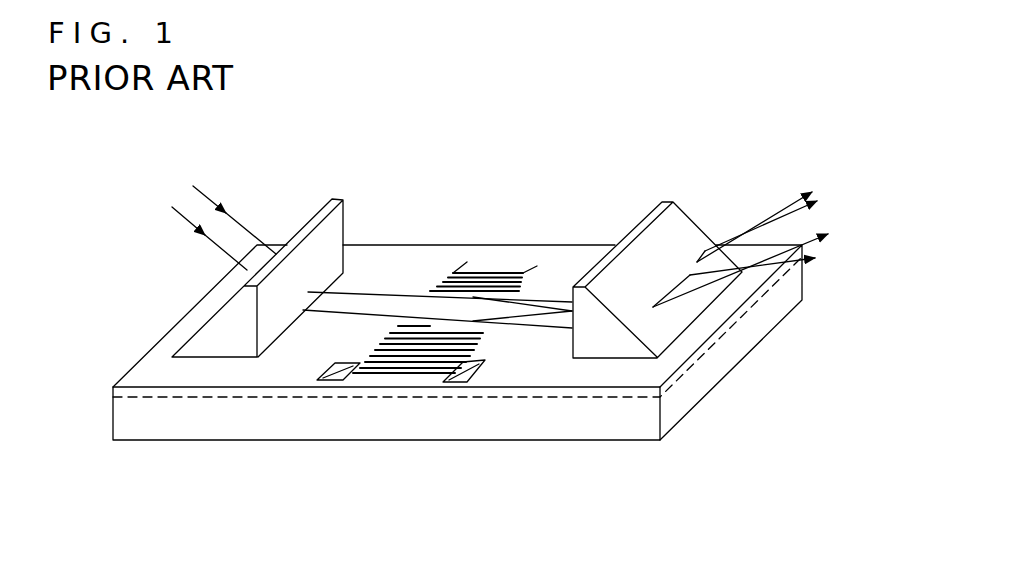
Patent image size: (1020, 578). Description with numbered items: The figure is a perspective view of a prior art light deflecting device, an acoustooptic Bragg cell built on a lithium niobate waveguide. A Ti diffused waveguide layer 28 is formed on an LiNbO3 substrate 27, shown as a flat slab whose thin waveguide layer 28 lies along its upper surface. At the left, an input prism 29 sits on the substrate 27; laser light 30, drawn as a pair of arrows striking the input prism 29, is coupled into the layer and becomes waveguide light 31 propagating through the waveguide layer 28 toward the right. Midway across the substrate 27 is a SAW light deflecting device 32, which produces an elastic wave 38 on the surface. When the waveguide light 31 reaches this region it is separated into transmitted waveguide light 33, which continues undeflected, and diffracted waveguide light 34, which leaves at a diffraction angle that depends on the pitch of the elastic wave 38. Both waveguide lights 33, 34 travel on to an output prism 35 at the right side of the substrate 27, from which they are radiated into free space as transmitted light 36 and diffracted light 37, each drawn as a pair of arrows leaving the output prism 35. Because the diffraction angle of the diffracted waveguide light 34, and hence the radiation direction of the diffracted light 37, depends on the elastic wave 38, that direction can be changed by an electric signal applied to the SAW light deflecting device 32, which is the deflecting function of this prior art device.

The LiNbO3 substrate 27 is at (527, 420).
The Ti diffused waveguide layer 28 is at (690, 393).
The input prism 29 is at (333, 198).
The laser light 30 is at (200, 204).
The waveguide light 31 is at (363, 300).
The SAW light deflecting device 32 is at (370, 372).
The transmitted waveguide light 33 is at (557, 320).
The diffracted waveguide light 34 is at (547, 298).
The output prism 35 is at (672, 198).
The transmitted light 36 is at (828, 240).
The diffracted light 37 is at (780, 203).
The elastic wave 38 is at (498, 270).